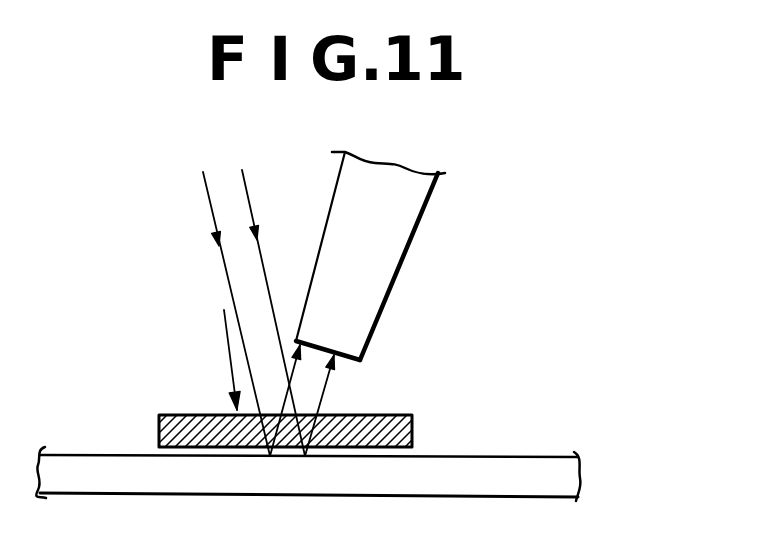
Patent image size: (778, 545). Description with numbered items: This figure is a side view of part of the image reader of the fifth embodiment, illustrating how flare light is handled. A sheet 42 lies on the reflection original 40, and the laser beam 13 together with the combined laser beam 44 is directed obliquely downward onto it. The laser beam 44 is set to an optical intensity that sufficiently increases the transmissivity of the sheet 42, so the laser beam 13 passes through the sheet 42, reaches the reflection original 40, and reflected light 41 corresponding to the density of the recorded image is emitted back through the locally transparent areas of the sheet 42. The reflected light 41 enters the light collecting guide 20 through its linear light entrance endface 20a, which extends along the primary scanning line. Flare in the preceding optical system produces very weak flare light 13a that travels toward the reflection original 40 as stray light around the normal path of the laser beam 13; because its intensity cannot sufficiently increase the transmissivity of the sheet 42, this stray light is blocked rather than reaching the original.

The laser beam 13 is at (210, 201).
The laser beam 44 is at (273, 313).
The flare light 13a is at (224, 346).
The light collecting guide 20 is at (405, 261).
The light entrance endface 20a is at (356, 365).
The reflection original 40 is at (78, 467).
The reflected light 41 is at (322, 396).
The sheet 42 is at (412, 428).